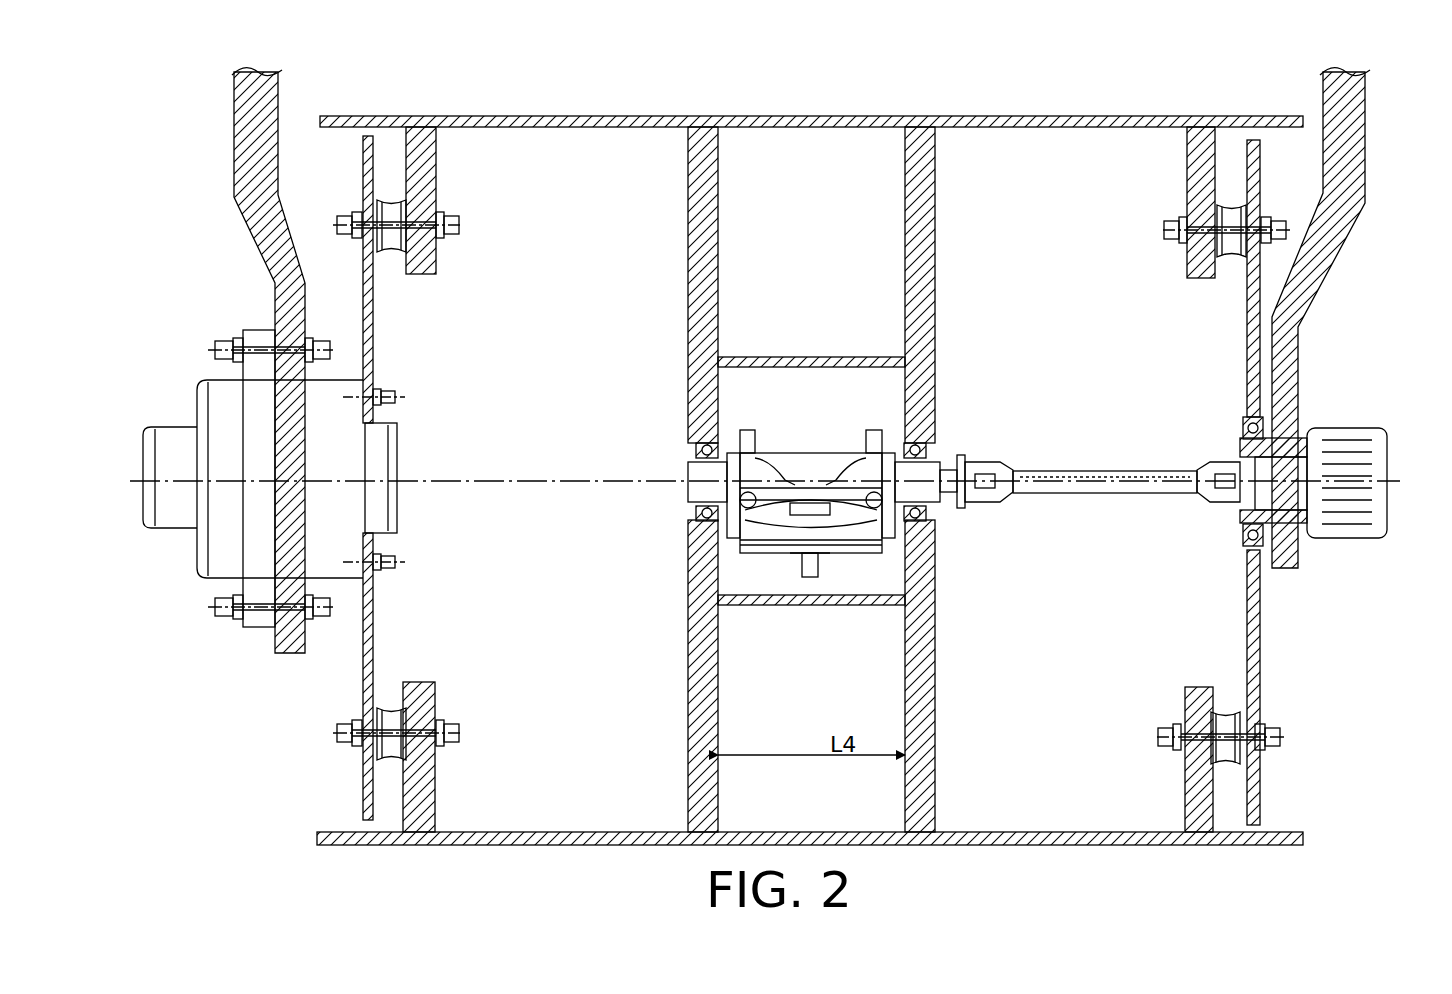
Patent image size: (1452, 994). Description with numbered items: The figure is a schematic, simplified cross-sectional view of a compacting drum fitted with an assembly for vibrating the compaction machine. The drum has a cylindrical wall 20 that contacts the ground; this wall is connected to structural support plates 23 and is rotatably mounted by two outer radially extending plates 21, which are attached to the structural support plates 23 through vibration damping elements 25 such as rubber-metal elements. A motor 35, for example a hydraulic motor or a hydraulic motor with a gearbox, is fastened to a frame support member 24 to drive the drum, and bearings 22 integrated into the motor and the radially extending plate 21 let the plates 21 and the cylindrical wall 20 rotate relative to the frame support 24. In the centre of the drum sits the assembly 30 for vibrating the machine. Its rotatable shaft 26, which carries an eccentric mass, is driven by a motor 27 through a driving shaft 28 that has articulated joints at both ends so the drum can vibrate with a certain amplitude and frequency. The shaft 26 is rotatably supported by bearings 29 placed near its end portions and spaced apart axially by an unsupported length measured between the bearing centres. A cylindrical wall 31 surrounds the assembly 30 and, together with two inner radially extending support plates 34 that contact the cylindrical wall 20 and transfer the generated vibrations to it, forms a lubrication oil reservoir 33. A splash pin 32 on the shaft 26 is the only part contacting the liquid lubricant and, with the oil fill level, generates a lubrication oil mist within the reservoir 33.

The cylindrical wall 20 is at (591, 116).
The radially extending plates 21 is at (372, 650).
The bearings 22 is at (695, 447).
The structural support plates 23 is at (425, 258).
The frame support member 24 is at (253, 143).
The vibration damping elements 25 is at (388, 256).
The rotatable shaft 26 is at (805, 460).
The motor 27 is at (1350, 435).
The driving shaft 28 is at (1073, 478).
The bearings 29 is at (925, 513).
The assembly for vibrating a compacting machine 30 is at (842, 422).
The cylindrical wall 31 is at (812, 580).
The splash pin 32 is at (805, 556).
The lubrication oil reservoir 33 is at (760, 576).
The inner radially extending support plates 34 is at (915, 197).
The motor 35 is at (259, 478).